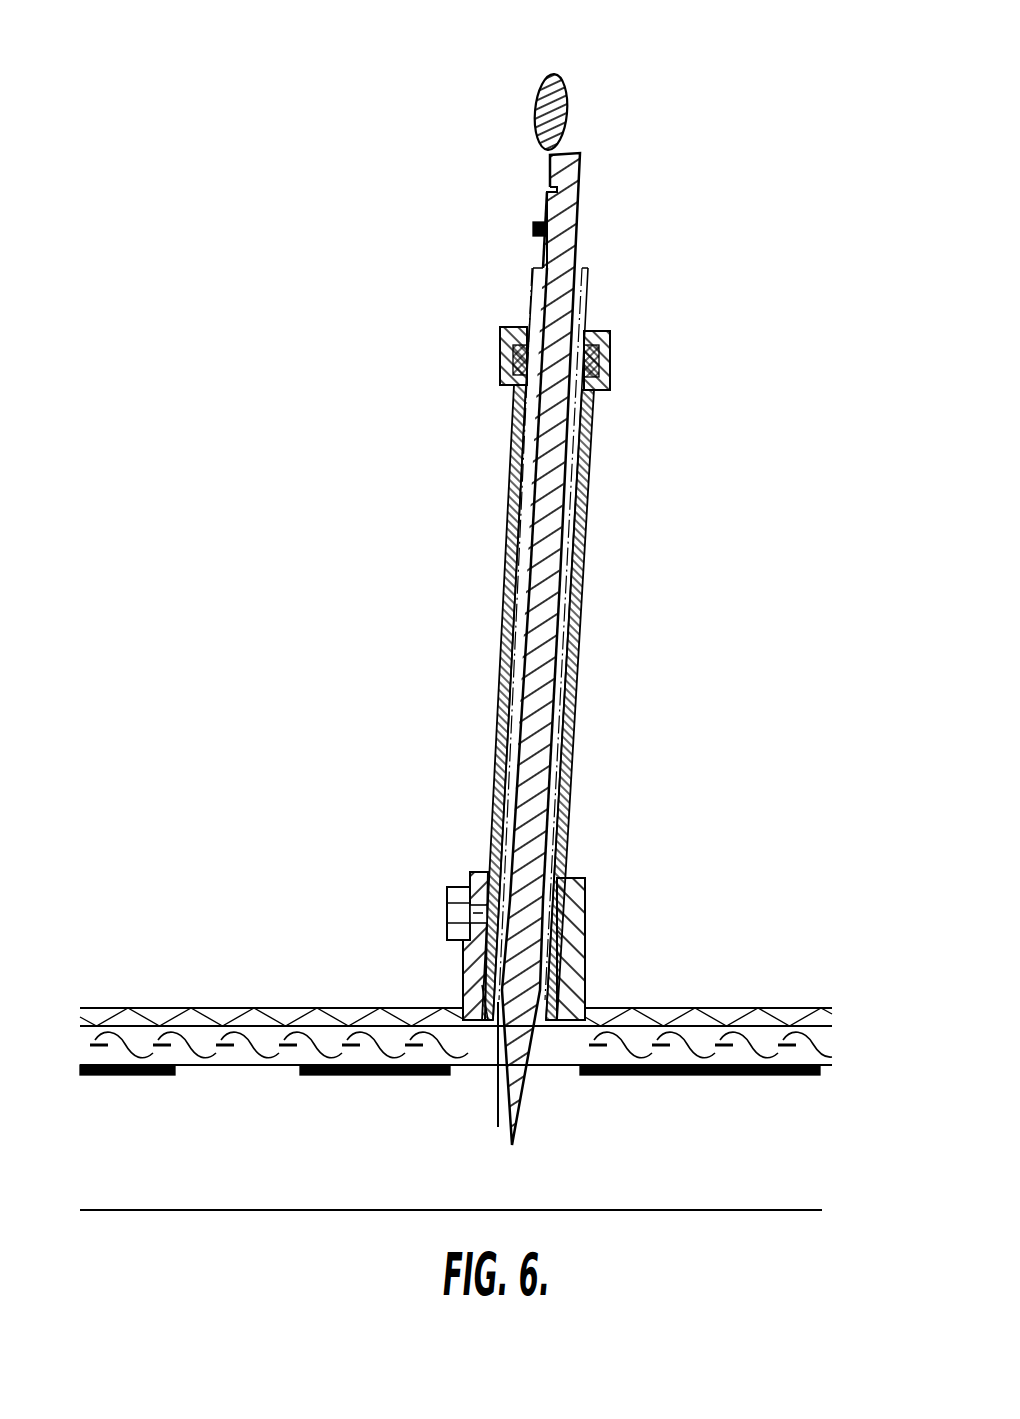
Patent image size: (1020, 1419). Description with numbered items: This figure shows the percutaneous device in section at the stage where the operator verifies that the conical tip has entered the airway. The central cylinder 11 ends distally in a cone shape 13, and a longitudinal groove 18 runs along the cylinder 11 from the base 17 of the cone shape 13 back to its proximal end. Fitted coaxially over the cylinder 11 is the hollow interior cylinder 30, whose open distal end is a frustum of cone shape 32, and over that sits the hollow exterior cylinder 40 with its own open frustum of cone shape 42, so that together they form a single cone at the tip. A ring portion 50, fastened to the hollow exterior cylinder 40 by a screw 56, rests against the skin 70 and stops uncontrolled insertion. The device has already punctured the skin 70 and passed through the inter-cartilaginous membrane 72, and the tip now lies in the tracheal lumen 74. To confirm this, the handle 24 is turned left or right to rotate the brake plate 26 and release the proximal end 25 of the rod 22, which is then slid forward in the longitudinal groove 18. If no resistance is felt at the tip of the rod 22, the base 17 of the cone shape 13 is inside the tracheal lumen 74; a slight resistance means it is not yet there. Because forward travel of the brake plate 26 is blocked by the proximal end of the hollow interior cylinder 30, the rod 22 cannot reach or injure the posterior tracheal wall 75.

The cylinder 11 is at (585, 250).
The cone shape 13 is at (513, 1133).
The base 17 is at (413, 1013).
The longitudinal groove 18 is at (530, 763).
The rod 22 is at (497, 1112).
The handle 24 is at (536, 118).
The proximal end 25 is at (543, 248).
The brake plate 26 is at (537, 223).
The hollow interior cylinder 30 is at (565, 667).
The frustum of cone shape 32 is at (500, 1024).
The hollow exterior cylinder 40 is at (503, 567).
The frustum of cone shape 42 is at (586, 970).
The ring portion 50 is at (483, 870).
The screw 56 is at (447, 917).
The skin 70 is at (653, 1008).
The inter-cartilaginous membrane 72 is at (762, 1038).
The tracheal lumen 74 is at (787, 1150).
The posterior tracheal wall 75 is at (735, 1212).